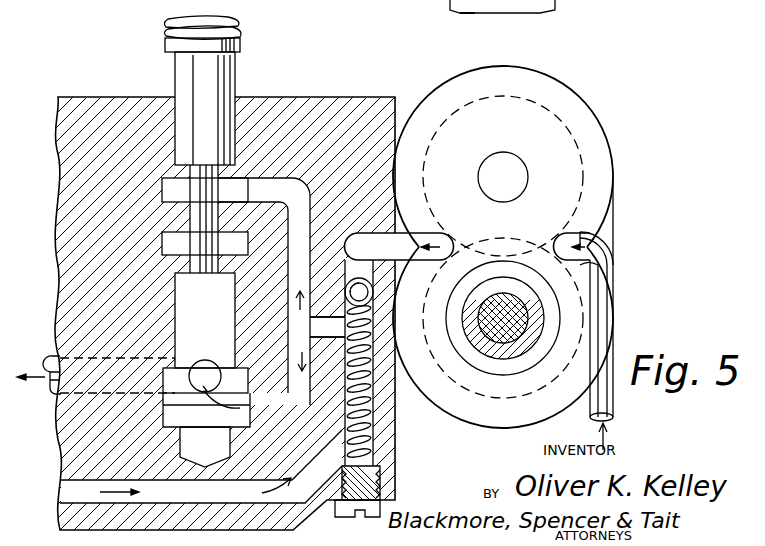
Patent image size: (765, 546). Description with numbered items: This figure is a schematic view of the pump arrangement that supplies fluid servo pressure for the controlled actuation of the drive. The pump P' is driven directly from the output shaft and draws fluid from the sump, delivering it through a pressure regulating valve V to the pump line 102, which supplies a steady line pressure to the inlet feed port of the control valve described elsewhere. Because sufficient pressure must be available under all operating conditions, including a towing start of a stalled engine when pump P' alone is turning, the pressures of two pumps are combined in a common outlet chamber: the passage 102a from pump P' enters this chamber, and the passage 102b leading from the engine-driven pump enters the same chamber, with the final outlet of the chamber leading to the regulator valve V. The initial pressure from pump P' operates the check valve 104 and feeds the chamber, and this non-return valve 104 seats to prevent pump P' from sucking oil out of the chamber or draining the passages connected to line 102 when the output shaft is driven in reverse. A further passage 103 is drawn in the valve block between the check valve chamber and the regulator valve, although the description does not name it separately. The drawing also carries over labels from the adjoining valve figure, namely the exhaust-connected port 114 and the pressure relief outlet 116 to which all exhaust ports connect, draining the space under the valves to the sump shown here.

The pressure regulating valve V is at (215, 95).
The pump line 102 is at (60, 360).
The passage from pump P' 102a is at (402, 236).
The passage from pump P 102b is at (303, 473).
The cross passage 103 is at (336, 330).
The non-return valve 104 is at (372, 291).
The port 114 is at (308, 0).
The pressure relief outlet 116 is at (334, 0).
The pump p' is at (604, 290).